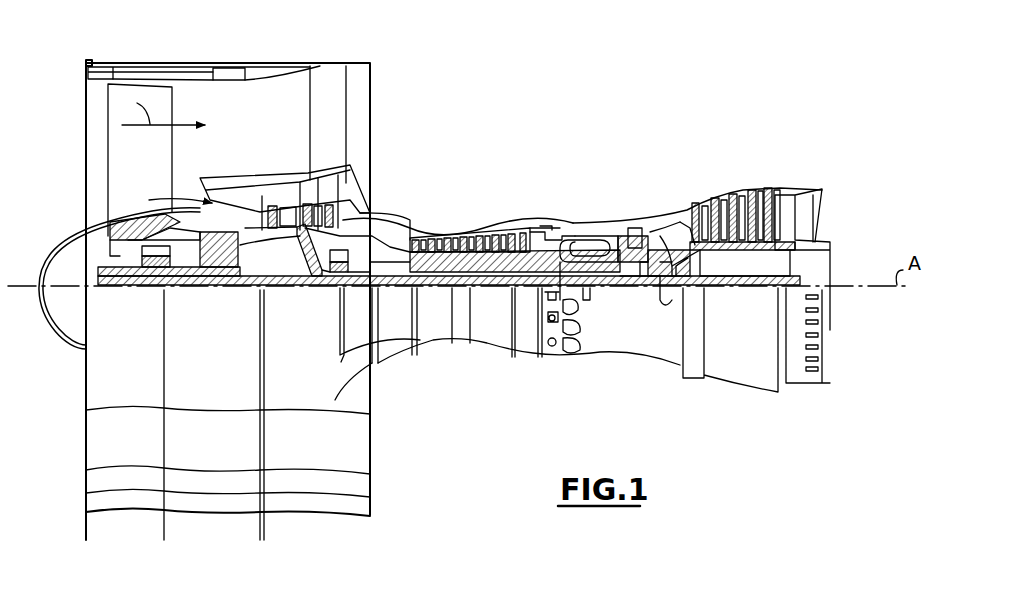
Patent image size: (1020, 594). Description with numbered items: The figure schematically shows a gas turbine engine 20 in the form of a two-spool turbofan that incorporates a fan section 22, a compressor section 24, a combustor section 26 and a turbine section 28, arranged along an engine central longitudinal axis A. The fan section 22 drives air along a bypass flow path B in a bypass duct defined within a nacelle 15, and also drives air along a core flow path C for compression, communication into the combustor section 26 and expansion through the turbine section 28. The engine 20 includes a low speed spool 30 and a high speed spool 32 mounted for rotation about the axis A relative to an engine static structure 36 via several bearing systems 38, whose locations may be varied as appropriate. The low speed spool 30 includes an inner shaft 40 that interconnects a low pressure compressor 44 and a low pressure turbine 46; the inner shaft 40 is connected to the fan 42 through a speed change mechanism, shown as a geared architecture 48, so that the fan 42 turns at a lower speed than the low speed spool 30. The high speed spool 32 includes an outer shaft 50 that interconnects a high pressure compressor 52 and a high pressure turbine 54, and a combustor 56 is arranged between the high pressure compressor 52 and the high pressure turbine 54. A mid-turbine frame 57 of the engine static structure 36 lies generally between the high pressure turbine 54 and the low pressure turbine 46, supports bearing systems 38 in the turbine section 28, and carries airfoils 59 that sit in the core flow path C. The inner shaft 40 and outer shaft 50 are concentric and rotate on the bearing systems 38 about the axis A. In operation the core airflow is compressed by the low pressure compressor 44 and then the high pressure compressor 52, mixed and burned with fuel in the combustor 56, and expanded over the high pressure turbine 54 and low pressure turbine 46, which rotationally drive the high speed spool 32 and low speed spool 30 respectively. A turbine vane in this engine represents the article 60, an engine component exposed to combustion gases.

The nacelle 15 is at (228, 68).
The gas turbine engine 20 is at (590, 102).
The fan section 22 is at (173, 56).
The compressor section 24 is at (410, 215).
The combustor section 26 is at (586, 204).
The turbine section 28 is at (710, 182).
The low speed spool 30 is at (490, 346).
The high speed spool 32 is at (530, 236).
The engine static structure 36 is at (524, 350).
The bearing systems 38 is at (340, 286).
The inner shaft 40 is at (390, 362).
The fan 42 is at (152, 163).
The low pressure compressor 44 is at (318, 222).
The low pressure turbine 46 is at (740, 196).
The geared architecture 48 is at (232, 278).
The outer shaft 50 is at (597, 290).
The high pressure compressor 52 is at (478, 236).
The high pressure turbine 54 is at (638, 228).
The combustor 56 is at (585, 243).
The mid-turbine frame 57 is at (672, 212).
The airfoils 59 is at (686, 242).
The article 60 is at (688, 236).